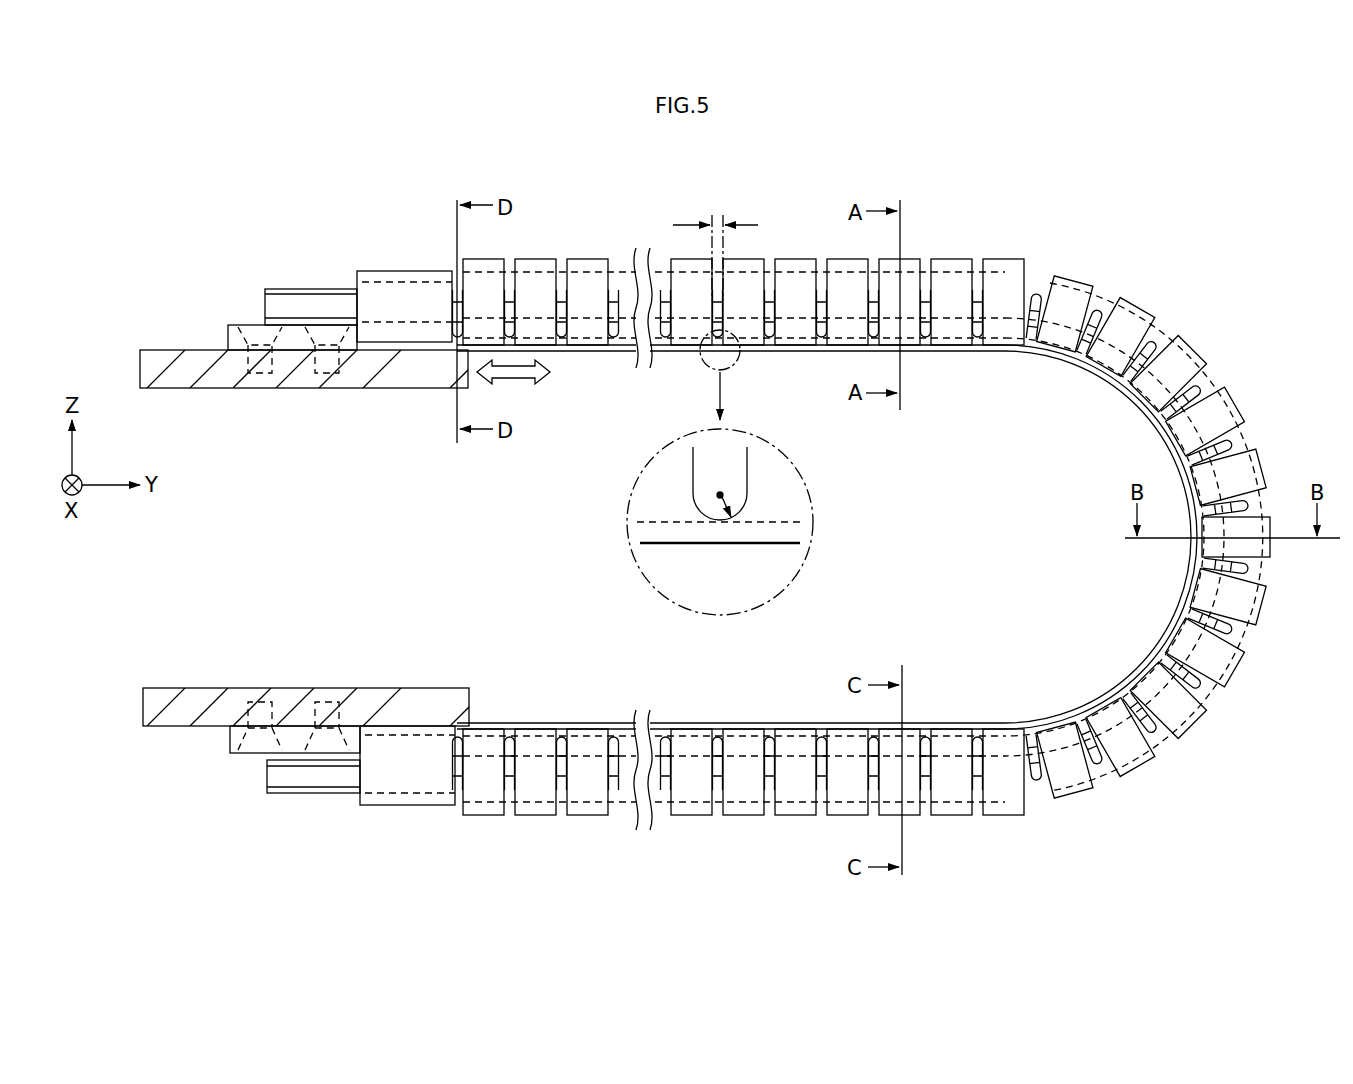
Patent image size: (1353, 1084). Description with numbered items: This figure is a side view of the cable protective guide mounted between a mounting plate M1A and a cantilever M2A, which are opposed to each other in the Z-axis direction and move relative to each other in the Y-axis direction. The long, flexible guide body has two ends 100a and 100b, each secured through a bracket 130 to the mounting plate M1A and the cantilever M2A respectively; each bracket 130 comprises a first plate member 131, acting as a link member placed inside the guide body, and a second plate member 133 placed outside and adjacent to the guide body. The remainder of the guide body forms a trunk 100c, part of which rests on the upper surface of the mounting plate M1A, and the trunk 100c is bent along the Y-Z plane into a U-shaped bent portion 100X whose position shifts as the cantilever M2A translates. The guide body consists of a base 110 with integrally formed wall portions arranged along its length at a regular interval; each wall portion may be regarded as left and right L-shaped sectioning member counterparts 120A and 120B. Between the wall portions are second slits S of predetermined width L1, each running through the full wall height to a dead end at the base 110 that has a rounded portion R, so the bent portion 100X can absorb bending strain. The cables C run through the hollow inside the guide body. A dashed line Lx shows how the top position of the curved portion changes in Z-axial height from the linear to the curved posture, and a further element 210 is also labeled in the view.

The end of the guide body 100a is at (400, 810).
The end of the guide body 100b is at (405, 255).
The trunk 100c is at (739, 535).
The U-shaped bent portion 100X is at (1240, 680).
The base 110 is at (827, 537).
The sectioning member counterpart 120A is at (896, 535).
The sectioning member counterpart 120B is at (593, 270).
The bracket 130 is at (301, 539).
The first plate member 131 is at (365, 330).
The second plate member 133 is at (240, 350).
The guide member 210 is at (1137, 403).
The cables C is at (297, 305).
The second slit S is at (732, 460).
The rounded portion R is at (735, 492).
The width L1 is at (745, 228).
The dashed line Lx is at (958, 322).
The mounting plate M1A is at (437, 719).
The cantilever M2A is at (437, 381).